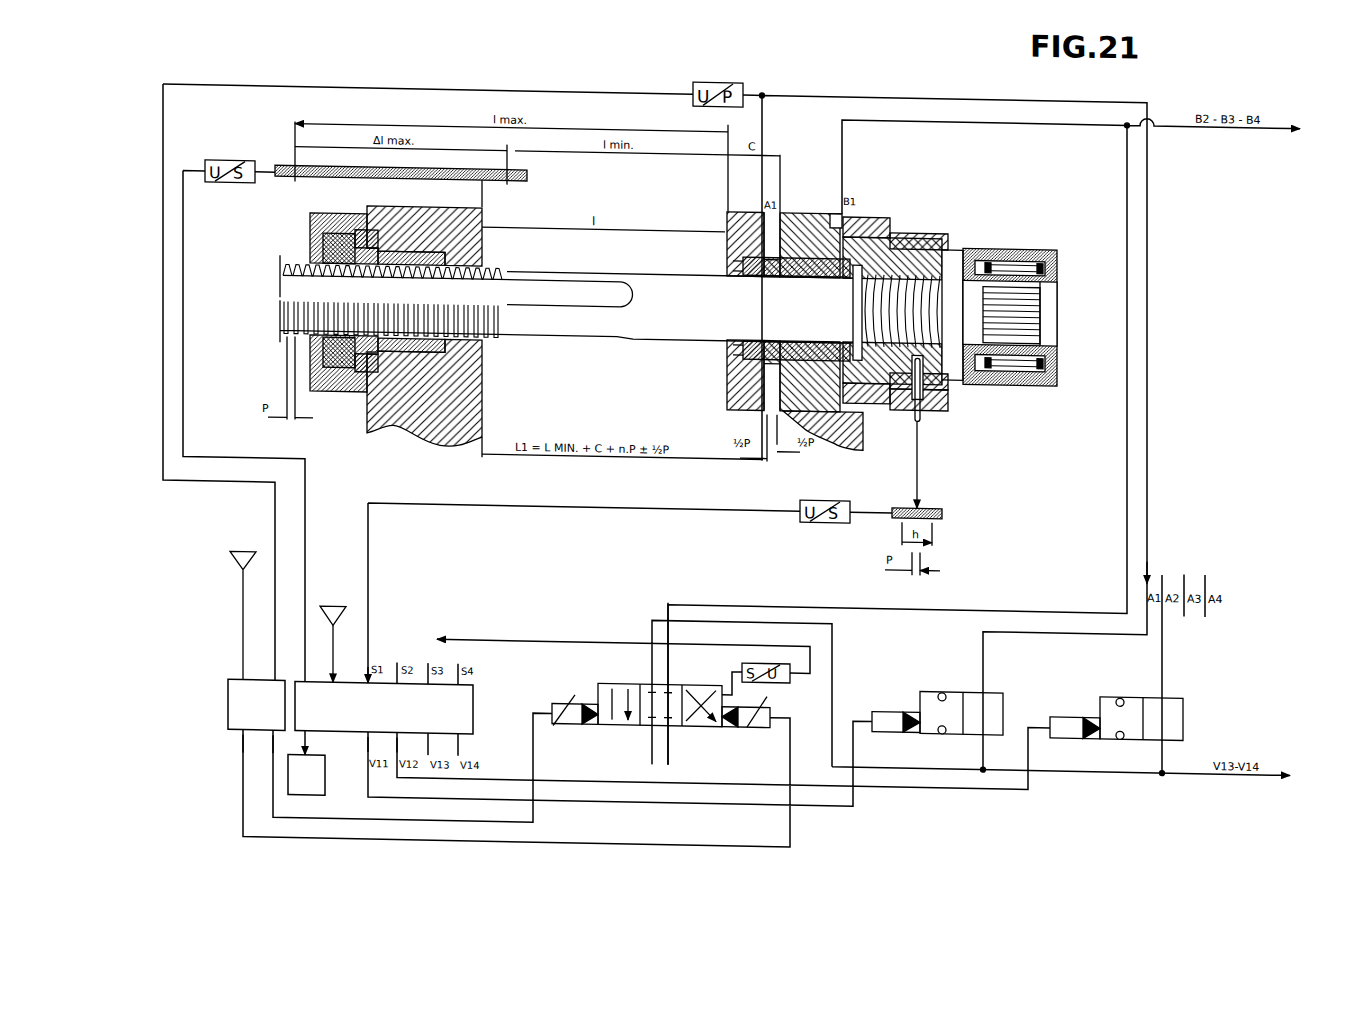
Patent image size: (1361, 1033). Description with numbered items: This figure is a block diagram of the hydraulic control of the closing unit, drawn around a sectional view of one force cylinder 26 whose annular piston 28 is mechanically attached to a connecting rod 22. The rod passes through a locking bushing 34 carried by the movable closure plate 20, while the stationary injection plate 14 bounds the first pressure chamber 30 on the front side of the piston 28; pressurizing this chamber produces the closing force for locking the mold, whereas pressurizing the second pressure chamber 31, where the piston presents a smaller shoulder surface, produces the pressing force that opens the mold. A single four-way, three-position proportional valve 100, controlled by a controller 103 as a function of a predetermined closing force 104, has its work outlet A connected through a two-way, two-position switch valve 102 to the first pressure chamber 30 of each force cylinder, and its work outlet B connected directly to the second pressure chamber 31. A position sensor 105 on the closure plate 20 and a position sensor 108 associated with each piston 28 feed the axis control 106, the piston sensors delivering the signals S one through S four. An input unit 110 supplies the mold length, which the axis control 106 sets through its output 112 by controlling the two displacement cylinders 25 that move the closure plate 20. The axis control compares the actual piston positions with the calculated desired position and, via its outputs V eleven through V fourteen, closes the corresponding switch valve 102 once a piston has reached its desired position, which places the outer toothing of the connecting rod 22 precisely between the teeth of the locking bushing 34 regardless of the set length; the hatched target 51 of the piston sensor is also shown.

The injection plate 14 is at (733, 383).
The closure plate 20 is at (473, 381).
The connecting rod 22 is at (652, 313).
The displacement cylinders 25 is at (325, 774).
The force cylinder 26 is at (866, 198).
The annular piston 28 is at (903, 213).
The first pressure chamber 30 is at (738, 243).
The second pressure chamber 31 is at (830, 199).
The locking bushing 34 is at (397, 339).
The sensor target 51 is at (928, 513).
The 4/3-way proportional valve 100 is at (617, 673).
The 2/2-way switch valve 102 is at (1132, 682).
The controller 103 is at (235, 703).
The predetermined closing force 104 is at (232, 558).
The position sensor 105 is at (490, 176).
The axis control 106 is at (470, 691).
The position sensor 108 is at (936, 398).
The input unit 110 is at (333, 599).
The output 112 is at (307, 734).